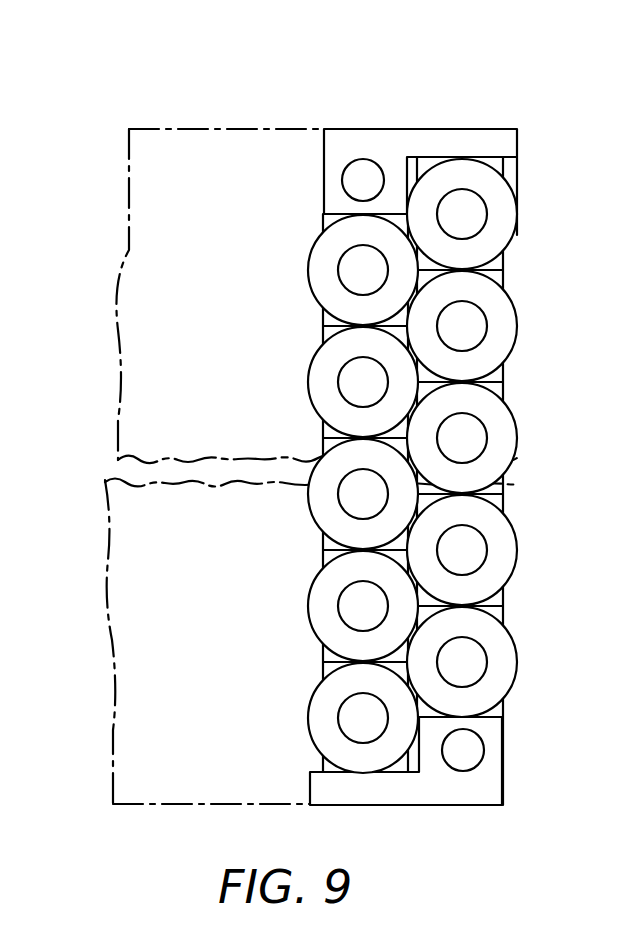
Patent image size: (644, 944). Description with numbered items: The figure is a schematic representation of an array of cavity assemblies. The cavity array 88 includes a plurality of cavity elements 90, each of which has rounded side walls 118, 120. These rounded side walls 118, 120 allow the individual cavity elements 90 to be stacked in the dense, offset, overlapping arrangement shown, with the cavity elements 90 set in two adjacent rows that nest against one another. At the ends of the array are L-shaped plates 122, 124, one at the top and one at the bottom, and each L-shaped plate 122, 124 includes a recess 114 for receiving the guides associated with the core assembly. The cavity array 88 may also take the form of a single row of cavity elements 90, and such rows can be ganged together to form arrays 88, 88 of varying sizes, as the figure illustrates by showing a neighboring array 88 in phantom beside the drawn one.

The roller assembly 88 is at (197, 148).
The rollers 90 is at (505, 170).
The end rollers 114 is at (348, 160).
The spacer 118 is at (330, 218).
The roller cage 120 is at (515, 222).
The upper end block 122 is at (372, 129).
The lower end block 124 is at (505, 790).